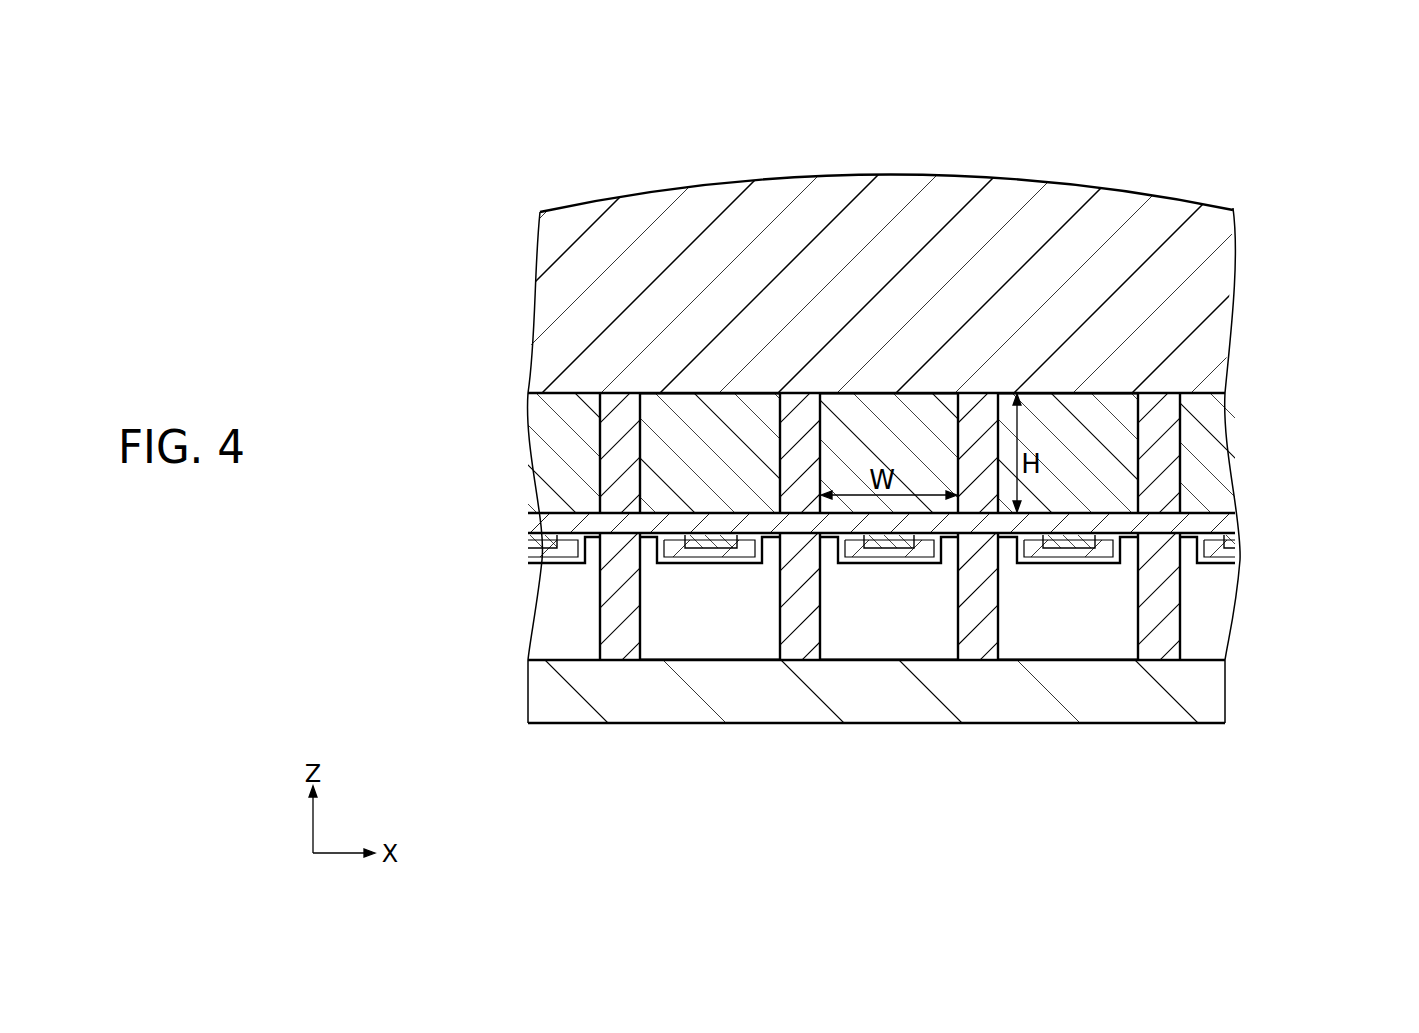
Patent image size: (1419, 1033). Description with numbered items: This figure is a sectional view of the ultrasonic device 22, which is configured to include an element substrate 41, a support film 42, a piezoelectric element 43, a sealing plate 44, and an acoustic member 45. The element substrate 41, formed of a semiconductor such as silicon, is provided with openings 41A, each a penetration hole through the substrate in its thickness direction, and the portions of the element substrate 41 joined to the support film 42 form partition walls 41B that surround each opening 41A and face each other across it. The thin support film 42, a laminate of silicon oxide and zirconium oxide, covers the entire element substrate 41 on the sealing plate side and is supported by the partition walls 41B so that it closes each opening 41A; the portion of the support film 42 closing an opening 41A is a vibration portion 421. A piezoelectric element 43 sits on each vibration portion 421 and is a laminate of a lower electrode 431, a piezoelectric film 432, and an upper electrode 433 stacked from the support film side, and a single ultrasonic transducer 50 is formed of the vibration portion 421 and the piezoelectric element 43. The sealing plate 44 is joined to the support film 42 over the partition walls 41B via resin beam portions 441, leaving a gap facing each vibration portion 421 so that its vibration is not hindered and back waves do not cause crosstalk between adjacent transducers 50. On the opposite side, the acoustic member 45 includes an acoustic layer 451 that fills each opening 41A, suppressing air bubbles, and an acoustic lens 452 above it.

The ultrasonic device 22 is at (1144, 108).
The acoustic member 45 is at (1362, 160).
The acoustic lens 452 is at (1128, 212).
The acoustic layer 451 is at (915, 420).
The element substrate 41 is at (1003, 312).
The partition wall 41B is at (610, 405).
The opening 41A is at (825, 410).
The support film 42 is at (1227, 523).
The vibration portion 421 is at (700, 518).
The piezoelectric element 43 is at (970, 795).
The lower electrode 431 is at (870, 565).
The piezoelectric film 432 is at (888, 548).
The upper electrode 433 is at (912, 565).
The sealing plate 44 is at (1210, 695).
The beam portion 441 is at (990, 628).
The ultrasonic transducer 50 is at (832, 600).